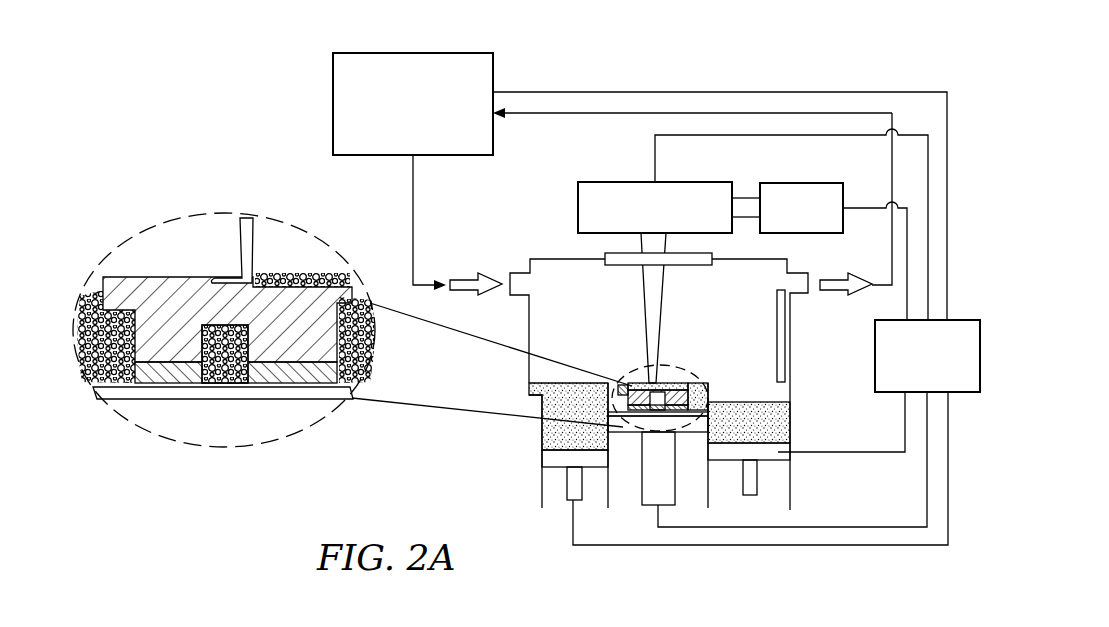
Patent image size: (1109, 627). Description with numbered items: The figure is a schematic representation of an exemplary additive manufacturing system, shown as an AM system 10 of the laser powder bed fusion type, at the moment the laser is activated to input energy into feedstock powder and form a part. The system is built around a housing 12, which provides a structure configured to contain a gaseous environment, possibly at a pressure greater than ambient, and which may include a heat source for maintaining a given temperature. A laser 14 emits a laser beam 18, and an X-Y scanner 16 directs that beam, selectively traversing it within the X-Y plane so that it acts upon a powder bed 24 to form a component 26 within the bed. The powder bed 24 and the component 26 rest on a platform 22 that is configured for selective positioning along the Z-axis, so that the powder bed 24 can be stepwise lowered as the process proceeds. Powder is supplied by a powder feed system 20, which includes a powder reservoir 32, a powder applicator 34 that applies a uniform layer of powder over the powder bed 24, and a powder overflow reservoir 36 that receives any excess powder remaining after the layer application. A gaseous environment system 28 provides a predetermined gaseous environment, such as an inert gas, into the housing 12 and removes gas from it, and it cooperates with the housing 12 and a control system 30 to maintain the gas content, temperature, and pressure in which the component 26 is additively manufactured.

The AM system 10 is at (222, 107).
The housing 12 is at (528, 370).
The laser 14 is at (776, 183).
The X-Y scanner 16 is at (578, 210).
The laser beam 18 is at (665, 307).
The powder feed system 20 is at (505, 433).
The platform 22 is at (693, 427).
The powder bed 24 is at (698, 387).
The component 26 is at (633, 383).
The gaseous environment system 28 is at (496, 73).
The control system 30 is at (875, 368).
The powder reservoir 32 is at (560, 382).
The powder applicator 34 is at (786, 312).
The powder overflow reservoir 36 is at (730, 402).